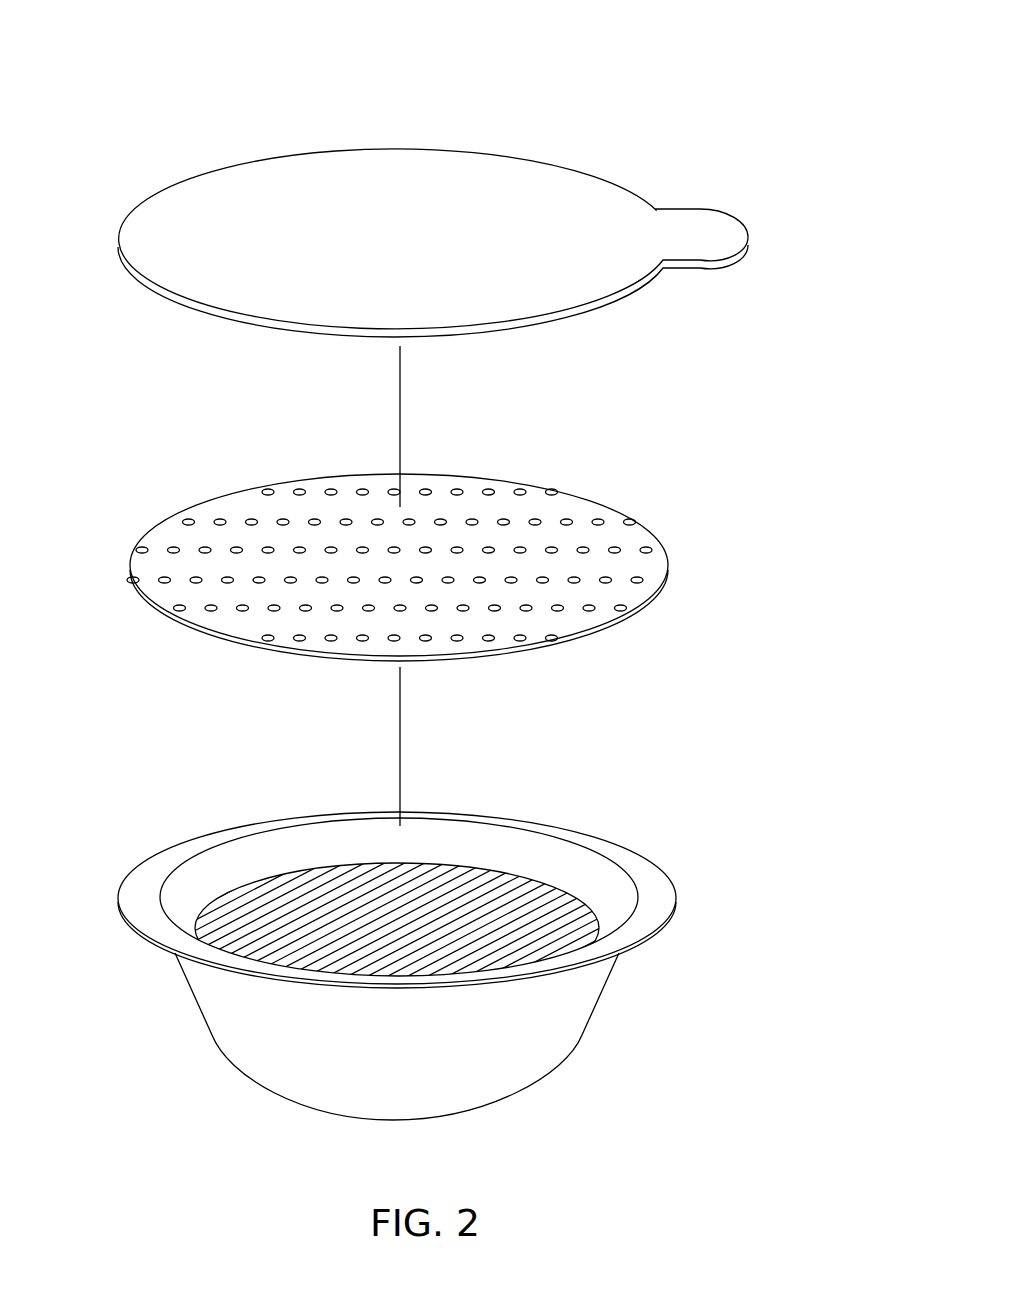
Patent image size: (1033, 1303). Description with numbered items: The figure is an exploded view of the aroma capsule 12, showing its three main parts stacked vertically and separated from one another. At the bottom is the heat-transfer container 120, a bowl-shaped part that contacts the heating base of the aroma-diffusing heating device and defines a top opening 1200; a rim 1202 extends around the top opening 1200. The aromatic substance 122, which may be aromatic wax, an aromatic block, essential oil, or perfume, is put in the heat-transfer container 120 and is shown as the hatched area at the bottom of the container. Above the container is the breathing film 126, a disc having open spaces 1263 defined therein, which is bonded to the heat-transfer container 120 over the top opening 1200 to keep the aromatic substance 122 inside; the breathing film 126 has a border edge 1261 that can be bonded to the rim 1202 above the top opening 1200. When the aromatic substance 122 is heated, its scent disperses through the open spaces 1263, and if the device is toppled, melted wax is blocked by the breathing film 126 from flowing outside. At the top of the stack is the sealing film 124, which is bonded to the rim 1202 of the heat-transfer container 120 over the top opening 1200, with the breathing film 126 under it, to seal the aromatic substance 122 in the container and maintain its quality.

The aroma capsule 12 is at (522, 123).
The sealing film 124 is at (248, 195).
The breathing film 126 is at (232, 508).
The border edge 1261 is at (662, 540).
The open spaces 1263 is at (455, 548).
The heat-transfer container 120 is at (547, 1045).
The top opening 1200 is at (538, 828).
The rim 1202 is at (650, 897).
The aromatic substance 122 is at (290, 933).